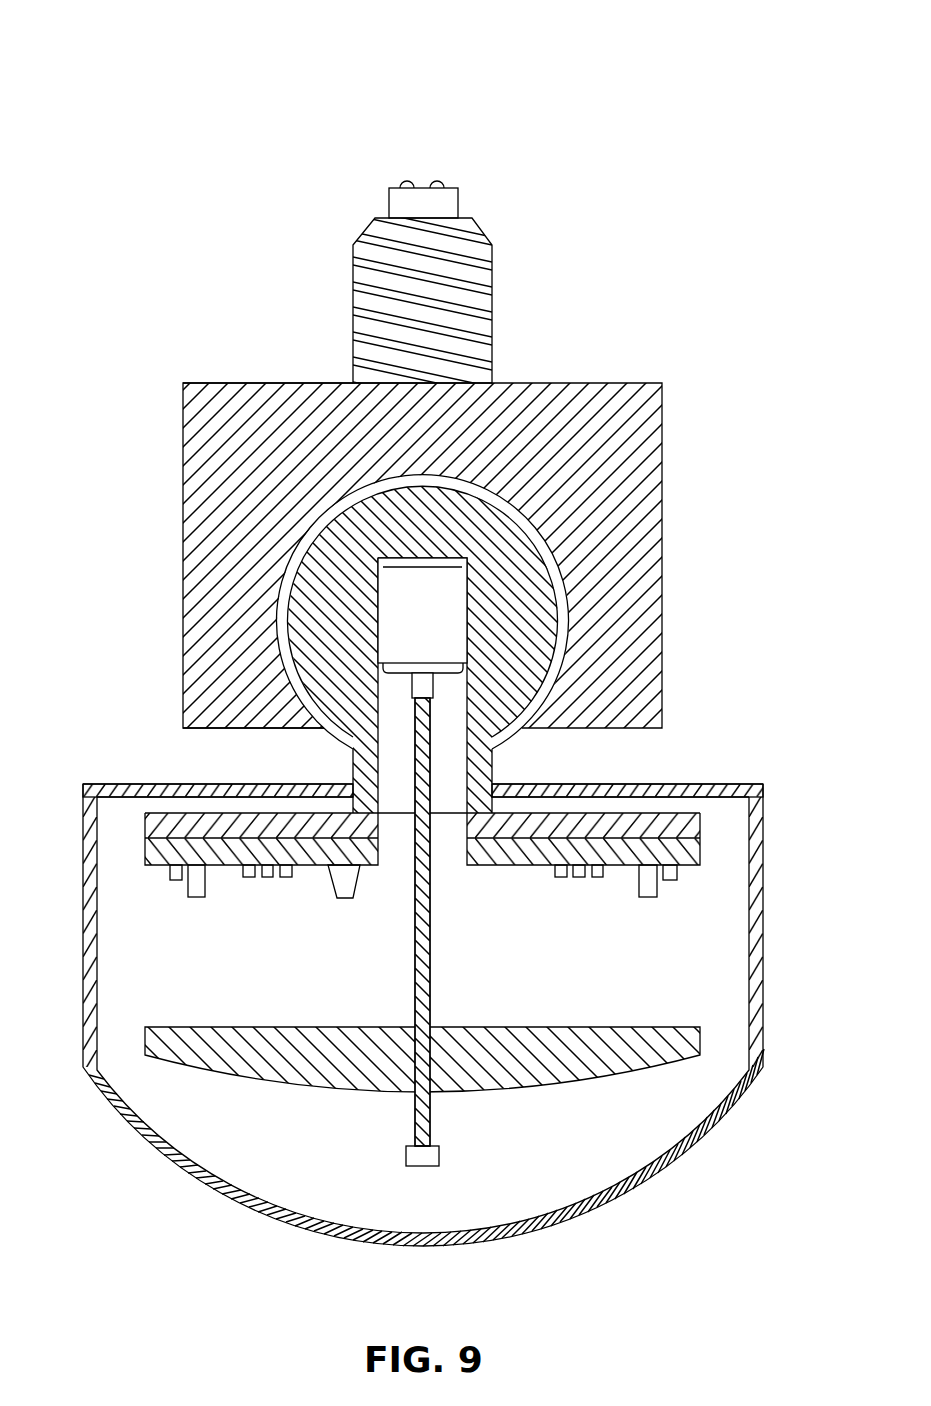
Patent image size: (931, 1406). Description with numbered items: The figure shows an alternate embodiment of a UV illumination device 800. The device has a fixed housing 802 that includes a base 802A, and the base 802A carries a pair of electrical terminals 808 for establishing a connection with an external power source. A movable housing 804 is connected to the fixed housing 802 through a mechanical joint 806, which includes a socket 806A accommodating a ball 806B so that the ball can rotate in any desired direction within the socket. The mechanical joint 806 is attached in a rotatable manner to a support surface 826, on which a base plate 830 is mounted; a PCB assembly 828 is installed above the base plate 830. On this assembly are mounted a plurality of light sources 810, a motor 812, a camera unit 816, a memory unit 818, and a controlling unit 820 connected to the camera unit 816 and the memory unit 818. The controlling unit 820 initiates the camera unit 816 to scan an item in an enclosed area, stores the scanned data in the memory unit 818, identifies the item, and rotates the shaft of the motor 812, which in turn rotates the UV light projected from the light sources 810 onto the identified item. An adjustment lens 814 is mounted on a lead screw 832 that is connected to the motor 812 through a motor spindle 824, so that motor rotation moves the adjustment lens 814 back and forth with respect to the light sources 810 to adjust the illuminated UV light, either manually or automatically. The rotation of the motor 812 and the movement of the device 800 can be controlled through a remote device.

The UV illumination device 800 is at (142, 113).
The fixed housing 802 is at (662, 390).
The base 802A is at (183, 729).
The movable housing 804 is at (83, 980).
The mechanical joint 806 is at (563, 584).
The socket 806A is at (183, 393).
The ball 806B is at (298, 630).
The electrical terminals 808 is at (446, 184).
The light sources 810 is at (672, 880).
The motor 812 is at (450, 641).
The adjustment lens 814 is at (280, 1078).
The camera unit 816 is at (347, 898).
The memory unit 818 is at (560, 877).
The controlling unit 820 is at (200, 897).
The motor spindle 824 is at (415, 688).
The support surface 826 is at (448, 815).
The PCB assembly 828 is at (145, 855).
The base plate 830 is at (145, 826).
The lead screw 832 is at (415, 1134).